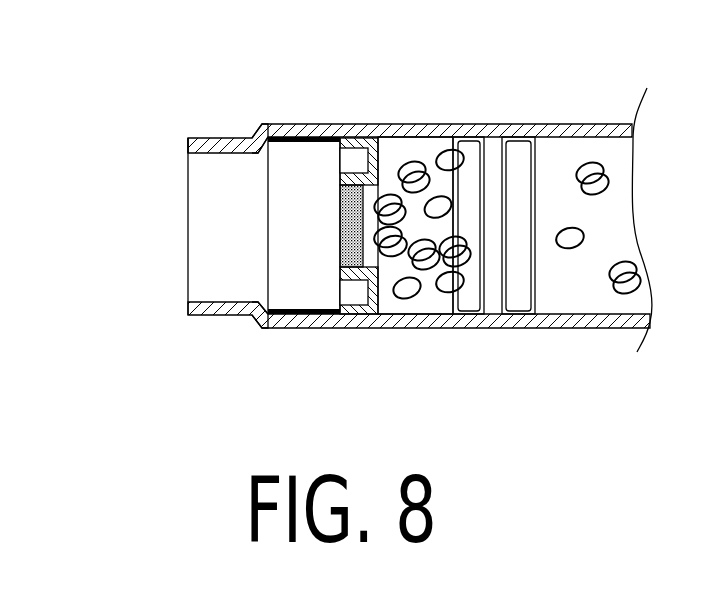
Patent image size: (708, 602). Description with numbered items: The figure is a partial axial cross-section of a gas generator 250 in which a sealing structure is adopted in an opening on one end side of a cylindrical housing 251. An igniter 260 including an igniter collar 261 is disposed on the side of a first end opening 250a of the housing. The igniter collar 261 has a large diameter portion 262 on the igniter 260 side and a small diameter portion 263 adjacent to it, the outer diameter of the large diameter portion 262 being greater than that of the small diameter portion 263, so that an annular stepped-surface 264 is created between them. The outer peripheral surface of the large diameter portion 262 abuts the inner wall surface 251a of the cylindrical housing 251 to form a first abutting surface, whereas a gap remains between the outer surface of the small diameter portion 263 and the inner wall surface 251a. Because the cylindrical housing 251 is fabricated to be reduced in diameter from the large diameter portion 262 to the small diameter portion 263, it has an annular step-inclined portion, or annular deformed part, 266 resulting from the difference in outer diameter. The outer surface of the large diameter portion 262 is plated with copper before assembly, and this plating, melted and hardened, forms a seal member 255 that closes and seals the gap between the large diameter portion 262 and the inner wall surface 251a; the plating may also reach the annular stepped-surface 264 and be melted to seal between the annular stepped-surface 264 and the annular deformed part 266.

The gas generator 250 is at (440, 80).
The first end opening 250a is at (188, 150).
The cylindrical housing 251 is at (318, 128).
The inner wall surface 251a is at (563, 298).
The seal member 255 is at (300, 136).
The igniter 260 is at (364, 263).
The igniter collar 261 is at (96, 253).
The large diameter portion 262 is at (278, 284).
The small diameter portion 263 is at (200, 262).
The annular stepped-surface 264 is at (247, 136).
The annular step-inclined portion 266 is at (258, 320).